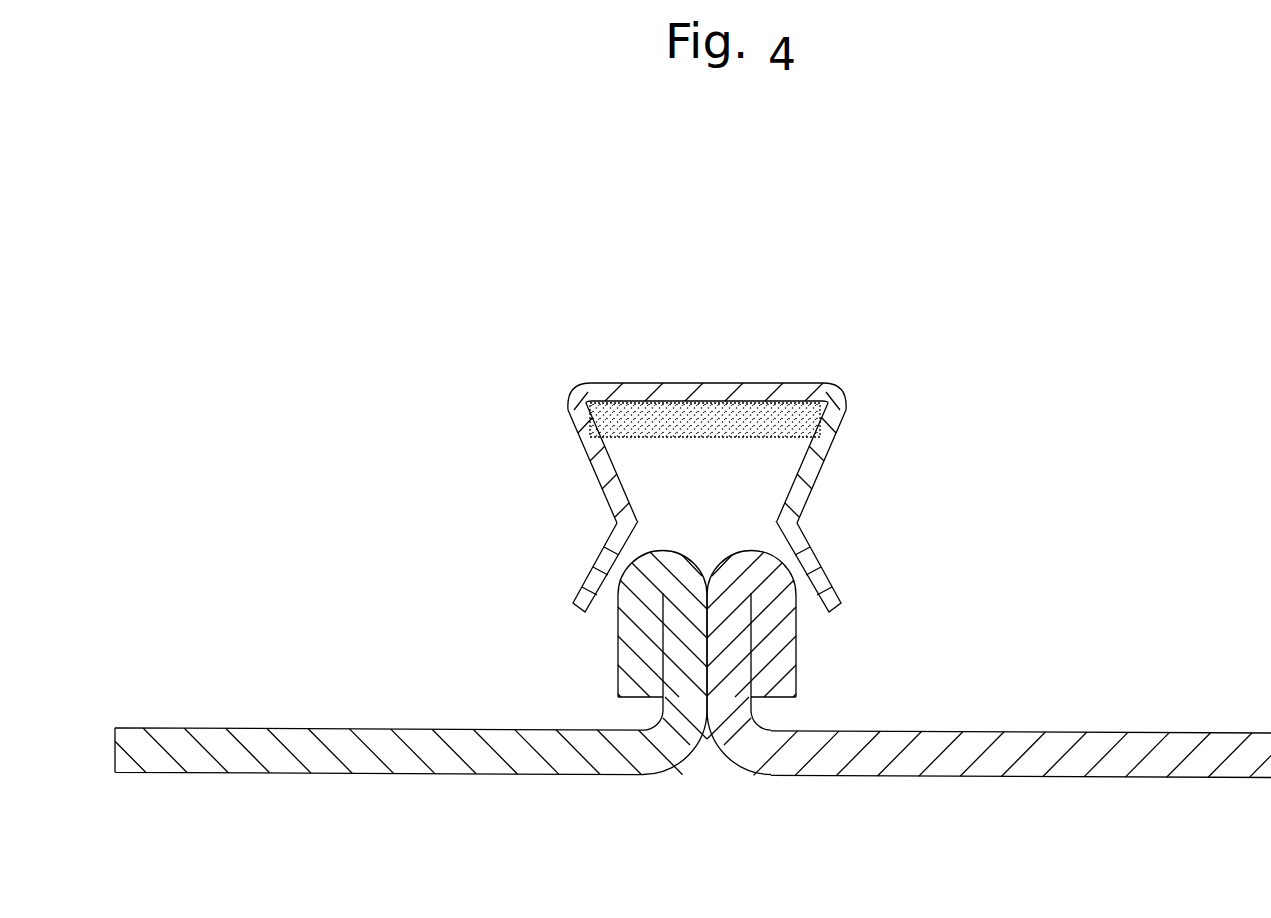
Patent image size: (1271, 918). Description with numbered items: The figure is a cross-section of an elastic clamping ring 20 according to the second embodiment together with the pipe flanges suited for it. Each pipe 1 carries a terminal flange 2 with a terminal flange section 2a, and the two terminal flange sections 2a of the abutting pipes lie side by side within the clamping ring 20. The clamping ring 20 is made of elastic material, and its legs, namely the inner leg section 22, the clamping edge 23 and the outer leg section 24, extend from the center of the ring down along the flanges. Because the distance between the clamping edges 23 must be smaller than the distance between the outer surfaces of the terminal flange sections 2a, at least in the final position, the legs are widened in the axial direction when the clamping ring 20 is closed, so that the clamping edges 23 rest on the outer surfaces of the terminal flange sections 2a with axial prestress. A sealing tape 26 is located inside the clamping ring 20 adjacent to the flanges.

The pipe 1 is at (522, 757).
The terminal flange 2 is at (685, 710).
The terminal flange section 2a is at (640, 661).
The clamping ring 20 is at (848, 379).
The inner leg section 22 is at (588, 458).
The clamping edge 23 is at (604, 518).
The outer leg section 24 is at (590, 584).
The sealing tape 26 is at (724, 412).